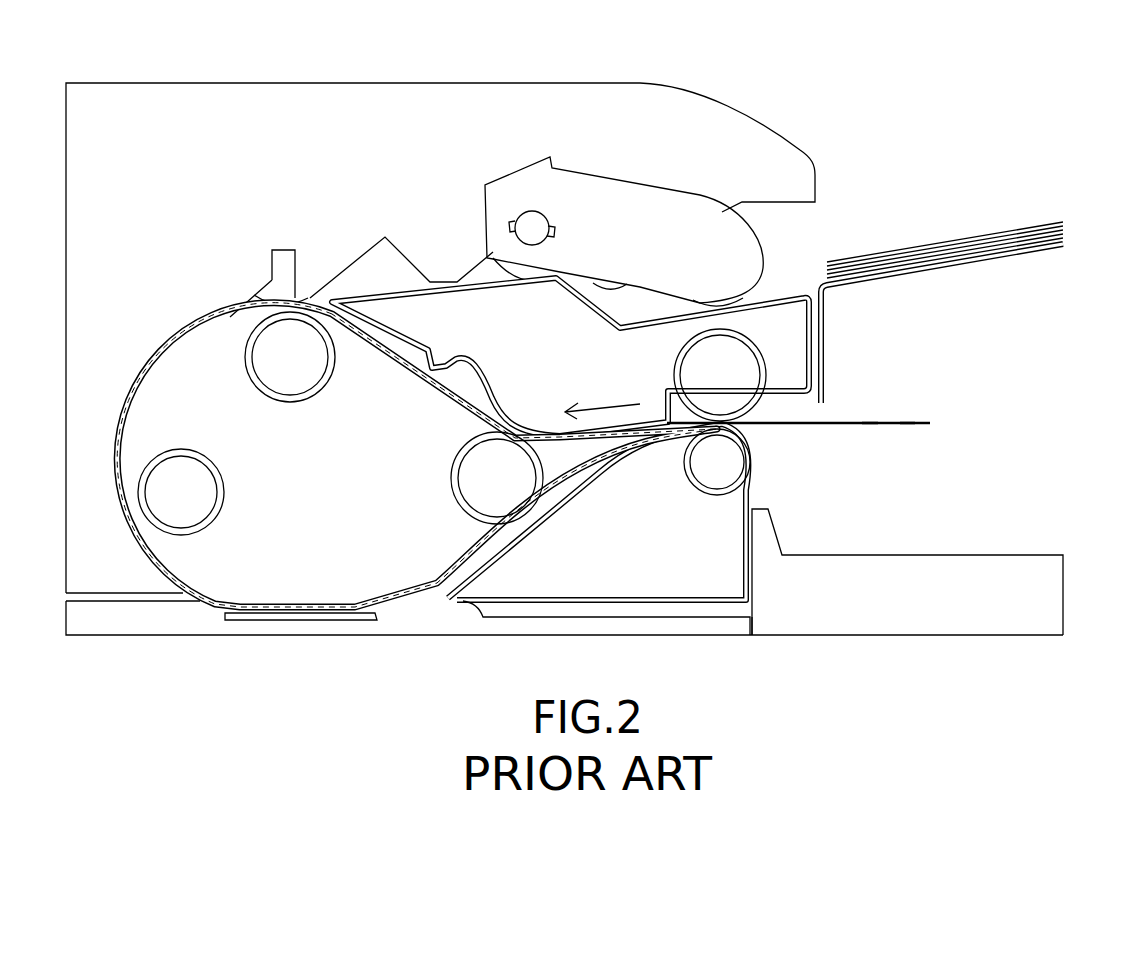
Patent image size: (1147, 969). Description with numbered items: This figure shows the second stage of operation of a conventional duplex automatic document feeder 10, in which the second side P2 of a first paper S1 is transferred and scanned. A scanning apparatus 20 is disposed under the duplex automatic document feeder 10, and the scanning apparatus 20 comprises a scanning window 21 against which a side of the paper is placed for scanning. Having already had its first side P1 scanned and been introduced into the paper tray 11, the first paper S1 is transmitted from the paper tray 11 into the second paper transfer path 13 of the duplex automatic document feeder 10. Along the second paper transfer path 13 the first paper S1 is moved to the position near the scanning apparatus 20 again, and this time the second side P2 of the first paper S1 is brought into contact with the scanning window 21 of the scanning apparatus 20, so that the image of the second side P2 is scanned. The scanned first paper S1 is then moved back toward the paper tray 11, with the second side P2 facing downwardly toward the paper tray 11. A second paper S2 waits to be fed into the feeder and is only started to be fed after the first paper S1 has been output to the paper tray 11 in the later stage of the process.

The duplex automatic document feeder 10 is at (297, 72).
The second paper transfer path 13 is at (193, 332).
The scanning apparatus 20 is at (153, 615).
The scanning window 21 is at (278, 618).
The paper tray 11 is at (960, 570).
The first paper S1 is at (829, 423).
The second paper S2 is at (905, 250).
The first side P1 is at (872, 432).
The second side P2 is at (900, 411).